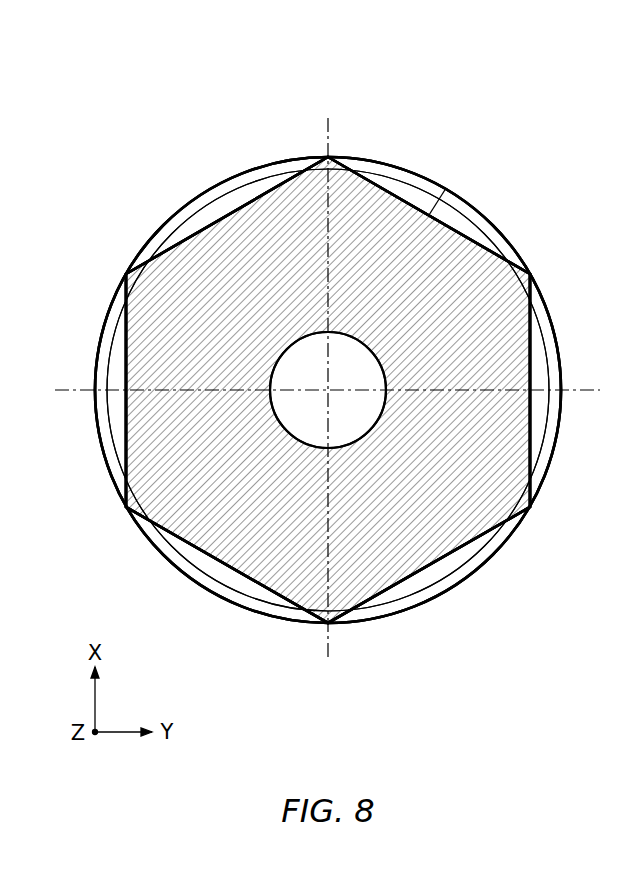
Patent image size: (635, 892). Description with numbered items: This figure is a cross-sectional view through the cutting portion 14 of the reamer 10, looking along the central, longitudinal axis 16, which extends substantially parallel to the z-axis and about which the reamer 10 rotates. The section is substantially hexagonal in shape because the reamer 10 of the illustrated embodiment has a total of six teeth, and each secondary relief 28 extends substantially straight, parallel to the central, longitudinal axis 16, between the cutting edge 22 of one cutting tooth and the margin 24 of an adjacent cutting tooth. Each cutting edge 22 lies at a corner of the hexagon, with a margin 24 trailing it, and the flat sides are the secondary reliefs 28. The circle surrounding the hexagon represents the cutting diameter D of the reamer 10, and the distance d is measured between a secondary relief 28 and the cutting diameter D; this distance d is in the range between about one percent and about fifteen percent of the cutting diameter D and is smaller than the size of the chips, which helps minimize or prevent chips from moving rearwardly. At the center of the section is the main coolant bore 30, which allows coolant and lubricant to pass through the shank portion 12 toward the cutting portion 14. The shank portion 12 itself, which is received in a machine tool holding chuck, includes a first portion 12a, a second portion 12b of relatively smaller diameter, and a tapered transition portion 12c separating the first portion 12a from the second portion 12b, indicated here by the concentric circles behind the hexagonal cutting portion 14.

The reamer 10 is at (548, 132).
The shank portion 12 is at (150, 168).
The first portion 12a is at (172, 216).
The second portion 12b is at (200, 207).
The tapered transition portion 12c is at (238, 184).
The cutting portion 14 is at (400, 600).
The central, longitudinal axis 16 is at (328, 390).
The cutting edge 22 is at (328, 156).
The margin 24 is at (331, 156).
The secondary relief 28 is at (258, 196).
The main coolant bore 30 is at (350, 353).
The distance d is at (400, 258).
The cutting diameter D is at (470, 206).